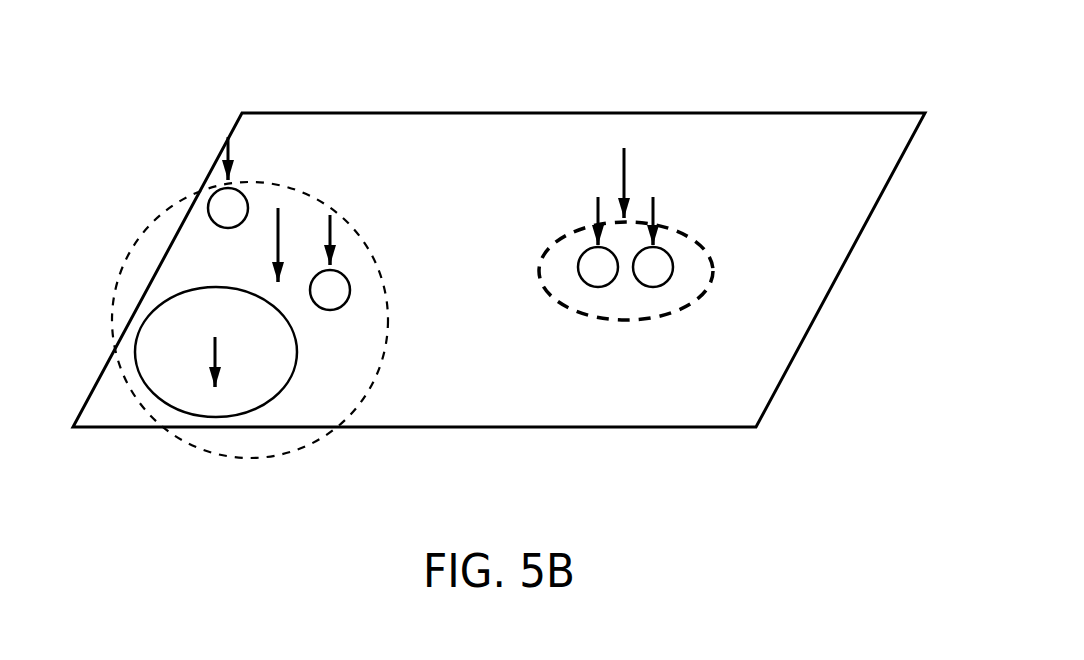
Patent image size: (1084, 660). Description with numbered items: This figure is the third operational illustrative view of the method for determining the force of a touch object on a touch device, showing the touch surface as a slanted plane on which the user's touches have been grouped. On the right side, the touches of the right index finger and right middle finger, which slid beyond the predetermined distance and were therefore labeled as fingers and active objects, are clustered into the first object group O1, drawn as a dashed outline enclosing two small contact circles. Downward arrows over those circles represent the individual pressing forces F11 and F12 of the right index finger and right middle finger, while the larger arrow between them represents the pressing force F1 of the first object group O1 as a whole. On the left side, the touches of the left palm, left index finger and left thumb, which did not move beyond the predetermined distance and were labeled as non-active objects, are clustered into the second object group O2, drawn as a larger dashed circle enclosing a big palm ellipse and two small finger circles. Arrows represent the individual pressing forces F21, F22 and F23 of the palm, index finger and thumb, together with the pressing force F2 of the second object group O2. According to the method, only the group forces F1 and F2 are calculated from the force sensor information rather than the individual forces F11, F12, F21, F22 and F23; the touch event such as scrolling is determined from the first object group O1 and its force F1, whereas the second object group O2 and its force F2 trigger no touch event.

The first object group O1 is at (717, 258).
The second object group O2 is at (228, 465).
The pressing force of the first object group F1 is at (626, 170).
The pressing force of the right index finger F11 is at (598, 228).
The pressing force of the right middle finger F12 is at (653, 228).
The pressing force of the second object group F2 is at (278, 233).
The pressing force of the left palm F21 is at (216, 352).
The pressing force of the left index finger F22 is at (226, 169).
The pressing force of the left thumb F23 is at (336, 245).